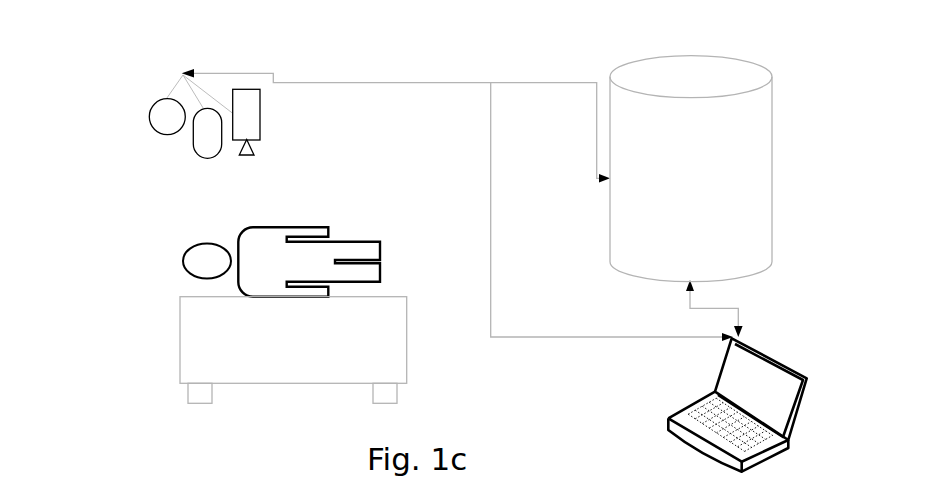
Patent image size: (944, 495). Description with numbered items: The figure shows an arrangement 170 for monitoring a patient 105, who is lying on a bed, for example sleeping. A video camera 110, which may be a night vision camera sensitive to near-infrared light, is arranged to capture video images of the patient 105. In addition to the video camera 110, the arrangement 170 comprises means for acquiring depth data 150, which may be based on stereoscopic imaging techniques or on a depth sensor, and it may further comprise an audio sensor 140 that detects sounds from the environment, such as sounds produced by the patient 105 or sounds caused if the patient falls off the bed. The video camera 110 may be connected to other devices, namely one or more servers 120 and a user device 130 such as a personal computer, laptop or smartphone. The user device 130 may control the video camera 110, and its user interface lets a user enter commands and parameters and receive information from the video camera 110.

The patient 105 is at (259, 244).
The video camera 110 is at (254, 90).
The server 120 is at (753, 142).
The user device 130 is at (782, 362).
The audio sensor 140 is at (161, 118).
The means for acquiring depth data 150 is at (207, 150).
The arrangement 170 is at (66, 135).